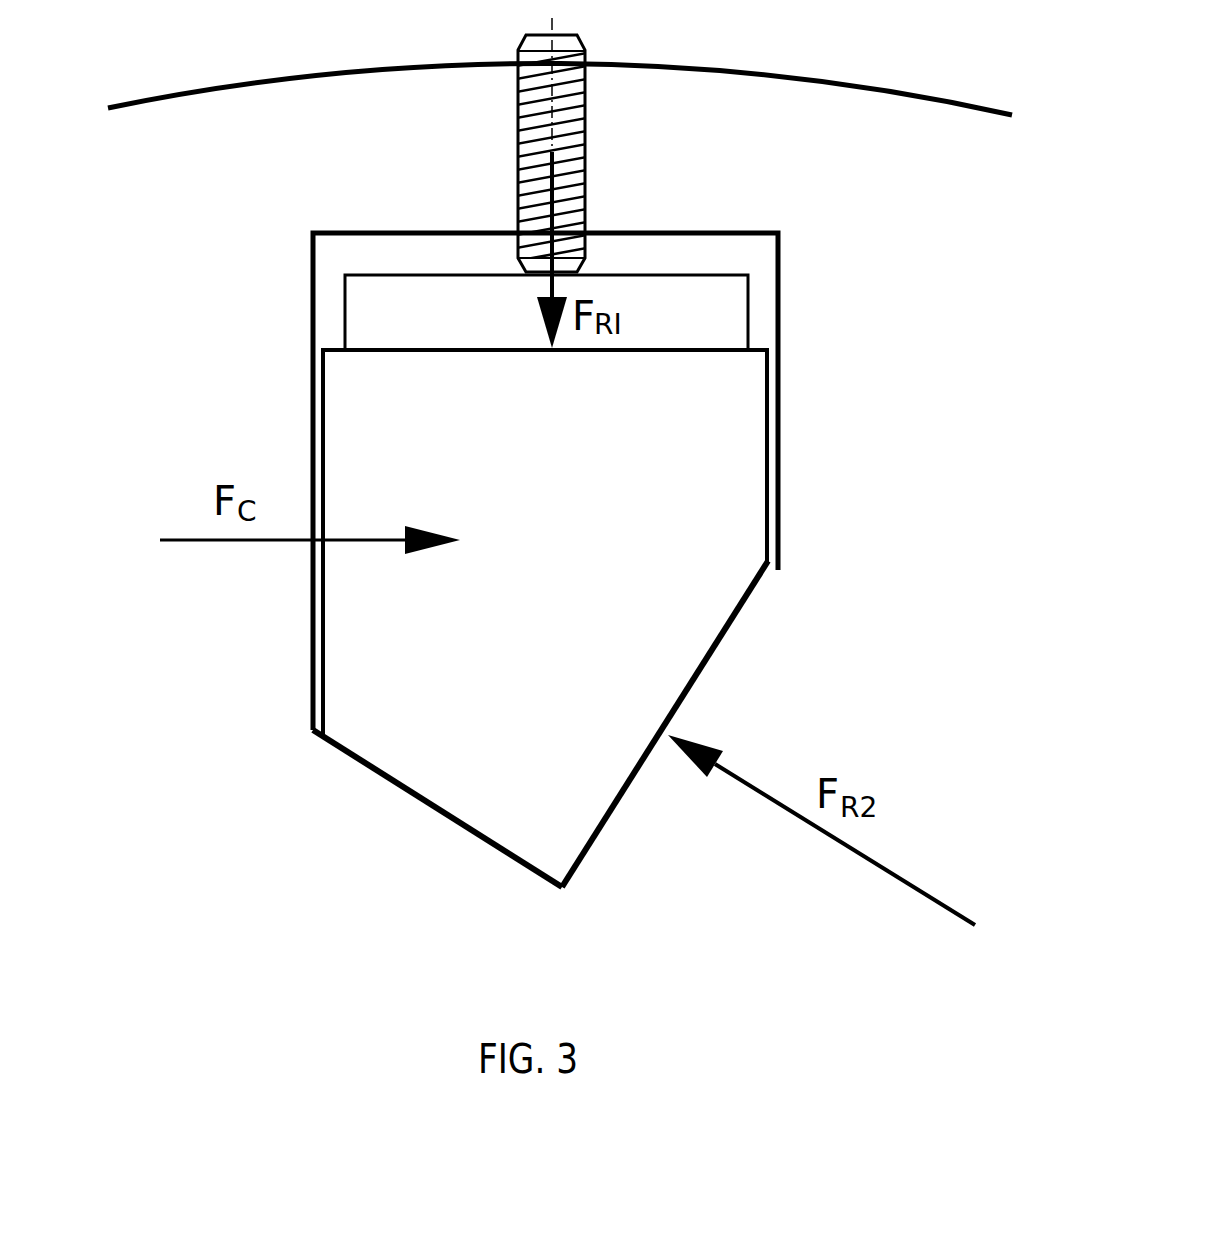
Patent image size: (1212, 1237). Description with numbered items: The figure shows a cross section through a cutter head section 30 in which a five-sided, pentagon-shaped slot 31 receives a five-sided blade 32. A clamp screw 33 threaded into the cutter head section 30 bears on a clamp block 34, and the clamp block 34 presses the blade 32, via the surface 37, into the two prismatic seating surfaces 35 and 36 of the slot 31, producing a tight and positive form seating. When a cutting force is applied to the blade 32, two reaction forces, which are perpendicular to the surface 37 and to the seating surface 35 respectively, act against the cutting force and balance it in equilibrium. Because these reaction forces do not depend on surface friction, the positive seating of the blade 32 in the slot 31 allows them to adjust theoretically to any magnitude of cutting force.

The cutter head section 30 is at (776, 72).
The slot 31 is at (780, 342).
The blade 32 is at (723, 531).
The clamp screw 33 is at (587, 160).
The clamp block 34 is at (637, 302).
The prismatic seating surface 35 is at (716, 653).
The prismatic seating surface 36 is at (412, 788).
The surface 37 is at (573, 352).